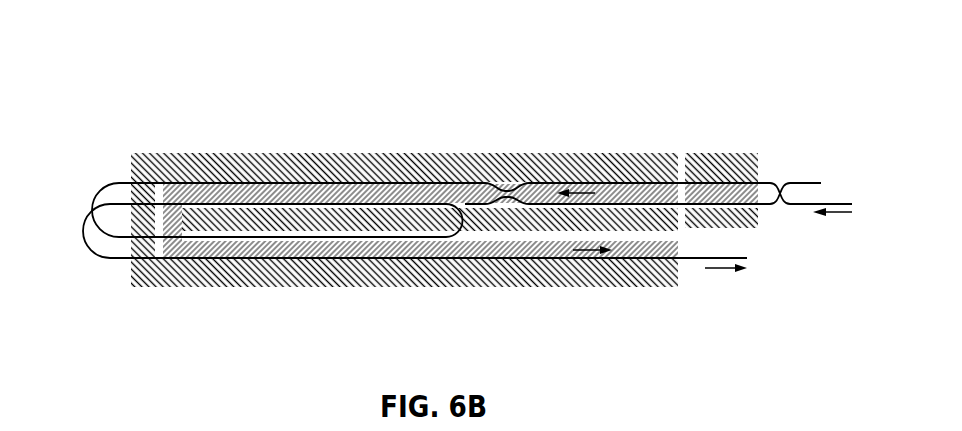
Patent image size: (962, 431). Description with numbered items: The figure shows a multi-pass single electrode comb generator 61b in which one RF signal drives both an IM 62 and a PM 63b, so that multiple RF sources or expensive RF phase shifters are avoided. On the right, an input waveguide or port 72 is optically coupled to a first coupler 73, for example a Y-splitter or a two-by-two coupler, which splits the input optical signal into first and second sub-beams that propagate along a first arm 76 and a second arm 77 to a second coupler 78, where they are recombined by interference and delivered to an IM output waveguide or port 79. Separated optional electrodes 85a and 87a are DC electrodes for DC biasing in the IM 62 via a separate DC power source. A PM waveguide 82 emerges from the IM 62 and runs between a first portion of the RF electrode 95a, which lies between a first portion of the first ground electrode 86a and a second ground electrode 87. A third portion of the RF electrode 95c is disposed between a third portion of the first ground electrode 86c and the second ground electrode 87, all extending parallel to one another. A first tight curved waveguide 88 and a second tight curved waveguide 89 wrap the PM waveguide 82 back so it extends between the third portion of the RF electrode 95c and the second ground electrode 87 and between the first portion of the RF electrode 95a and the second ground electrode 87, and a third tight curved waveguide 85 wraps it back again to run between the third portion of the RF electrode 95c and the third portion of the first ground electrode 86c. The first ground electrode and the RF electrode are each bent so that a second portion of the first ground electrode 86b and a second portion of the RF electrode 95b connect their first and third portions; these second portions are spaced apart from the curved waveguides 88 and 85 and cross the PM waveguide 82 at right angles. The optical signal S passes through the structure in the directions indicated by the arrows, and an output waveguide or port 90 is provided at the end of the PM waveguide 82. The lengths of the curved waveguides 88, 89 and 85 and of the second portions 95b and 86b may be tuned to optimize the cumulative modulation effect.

The multi-pass single electrode comb generator 61b is at (232, 56).
The IM 62 is at (695, 96).
The PM 63b is at (210, 131).
The input waveguide or port 72 is at (815, 204).
The first coupler 73 is at (780, 190).
The first arm 76 is at (573, 182).
The second arm 77 is at (517, 199).
The second coupler 78 is at (510, 191).
The IM output waveguide or port 79 is at (417, 182).
The PM waveguide 82 is at (159, 182).
The third tight curved waveguide 85 is at (82, 232).
The separated optional electrode 85a is at (752, 194).
The first portion of the first ground electrode 86a is at (305, 157).
The second portion of the first ground electrode 86b is at (131, 228).
The third portion of the first ground electrode 86c is at (257, 276).
The second ground electrode 87 is at (304, 220).
The separated optional electrode 87a is at (732, 215).
The first tight curved waveguide 88 is at (100, 186).
The second tight curved waveguide 89 is at (463, 238).
The output waveguide or port 90 is at (685, 258).
The first portion of the RF electrode 95a is at (355, 187).
The second portion of the RF electrode 95b is at (172, 230).
The third portion of the RF electrode 95c is at (513, 253).
The optical signal S is at (607, 193).